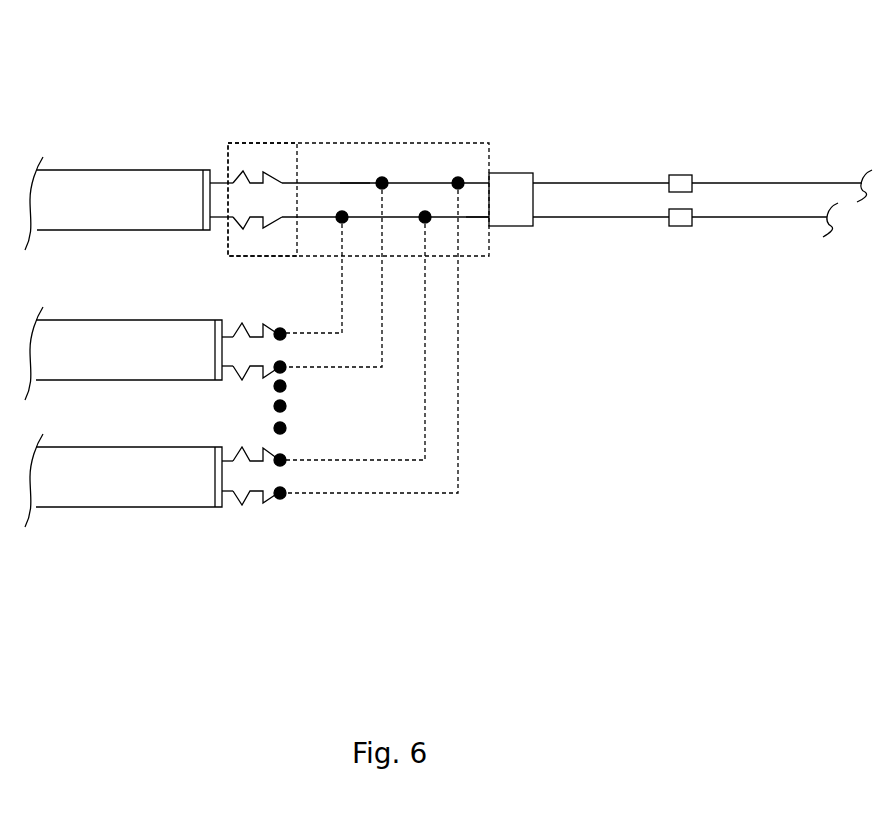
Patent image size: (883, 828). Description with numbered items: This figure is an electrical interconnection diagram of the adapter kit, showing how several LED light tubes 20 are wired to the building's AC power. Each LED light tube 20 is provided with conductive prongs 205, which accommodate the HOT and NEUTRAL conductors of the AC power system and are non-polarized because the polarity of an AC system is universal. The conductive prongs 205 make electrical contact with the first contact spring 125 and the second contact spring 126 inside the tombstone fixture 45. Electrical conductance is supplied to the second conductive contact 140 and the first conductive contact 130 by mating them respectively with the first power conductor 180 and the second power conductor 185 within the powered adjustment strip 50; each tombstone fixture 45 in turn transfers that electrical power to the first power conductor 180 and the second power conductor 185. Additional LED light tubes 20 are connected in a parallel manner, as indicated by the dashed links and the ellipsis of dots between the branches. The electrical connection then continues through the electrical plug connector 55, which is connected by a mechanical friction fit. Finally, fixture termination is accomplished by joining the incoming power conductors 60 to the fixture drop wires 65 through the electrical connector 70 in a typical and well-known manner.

The LED light tube 20 is at (88, 190).
The conductive prongs 205 is at (219, 182).
The first contact spring 125 is at (243, 172).
The second contact spring 126 is at (243, 229).
The tombstone fixture 45 is at (277, 143).
The powered adjustment strip 50 is at (440, 143).
The second conductive contact 140 is at (281, 182).
The first conductive contact 130 is at (282, 218).
The first power conductor 180 is at (350, 183).
The second power conductor 185 is at (474, 217).
The electrical plug connector 55 is at (527, 173).
The incoming power conductors 60 is at (615, 183).
The electrical connector 70 is at (683, 175).
The fixture drop wires 65 is at (775, 183).